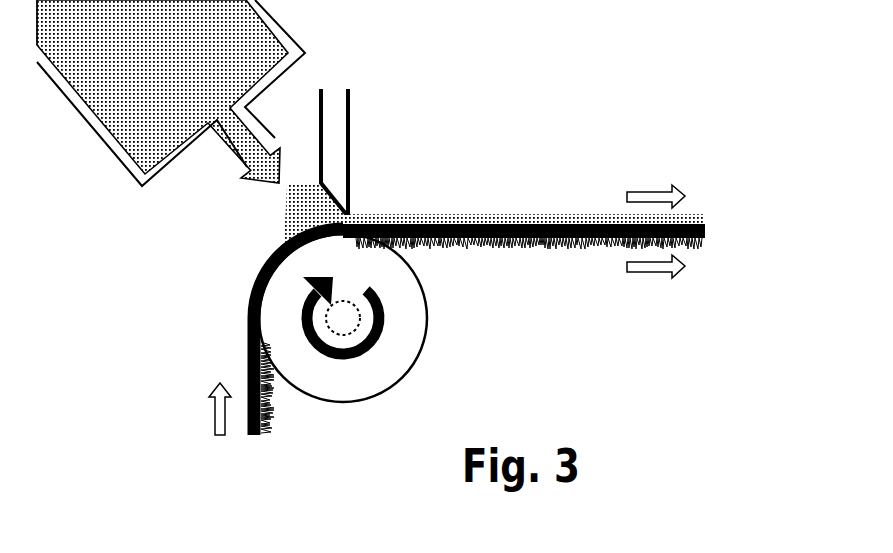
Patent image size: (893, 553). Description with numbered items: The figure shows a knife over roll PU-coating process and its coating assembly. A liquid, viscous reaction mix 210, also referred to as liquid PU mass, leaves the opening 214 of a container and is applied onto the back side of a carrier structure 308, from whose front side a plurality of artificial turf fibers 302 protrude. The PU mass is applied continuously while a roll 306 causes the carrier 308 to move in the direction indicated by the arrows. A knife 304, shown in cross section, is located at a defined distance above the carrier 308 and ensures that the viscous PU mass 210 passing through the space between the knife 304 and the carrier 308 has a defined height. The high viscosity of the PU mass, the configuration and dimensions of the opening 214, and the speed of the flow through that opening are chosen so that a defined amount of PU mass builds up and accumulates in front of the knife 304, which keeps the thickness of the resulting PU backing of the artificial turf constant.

The liquid, viscous reaction mix 210 is at (194, 91).
The opening of the container 214 is at (232, 167).
The artificial turf fibers 302 is at (706, 243).
The knife 304 is at (348, 139).
The roll 306 is at (407, 328).
The carrier structure 308 is at (706, 225).